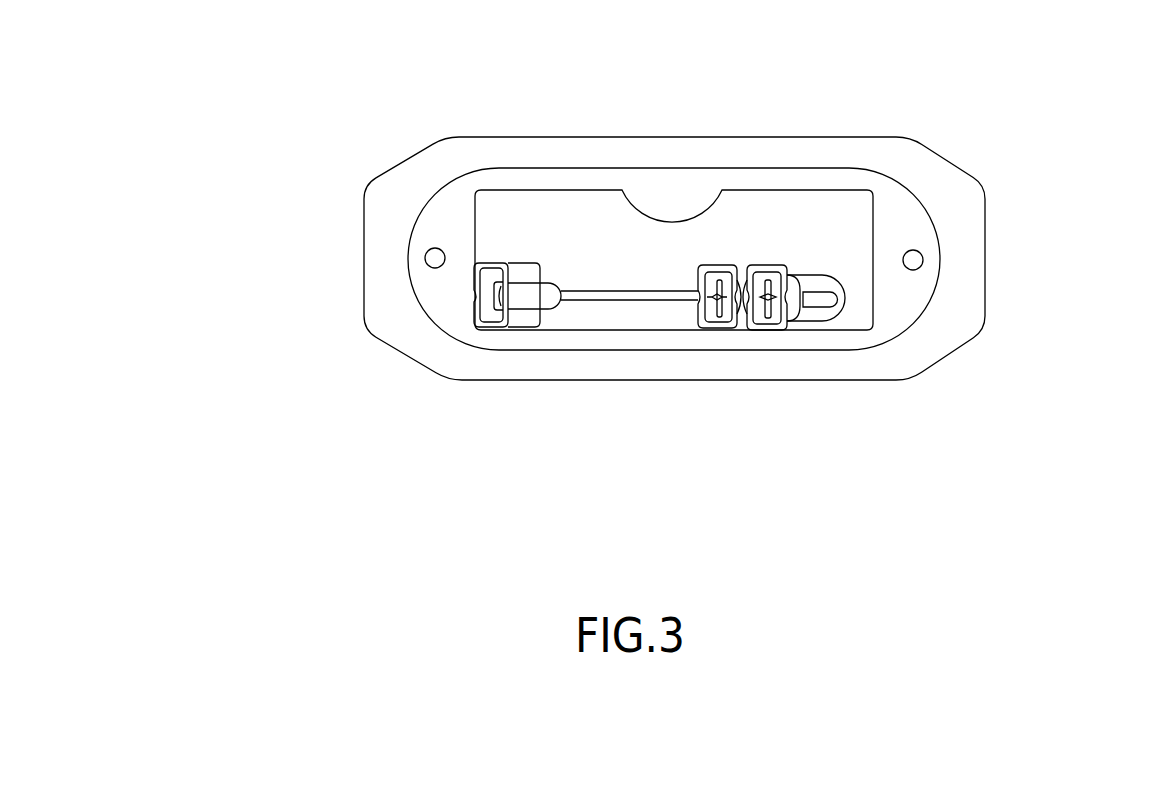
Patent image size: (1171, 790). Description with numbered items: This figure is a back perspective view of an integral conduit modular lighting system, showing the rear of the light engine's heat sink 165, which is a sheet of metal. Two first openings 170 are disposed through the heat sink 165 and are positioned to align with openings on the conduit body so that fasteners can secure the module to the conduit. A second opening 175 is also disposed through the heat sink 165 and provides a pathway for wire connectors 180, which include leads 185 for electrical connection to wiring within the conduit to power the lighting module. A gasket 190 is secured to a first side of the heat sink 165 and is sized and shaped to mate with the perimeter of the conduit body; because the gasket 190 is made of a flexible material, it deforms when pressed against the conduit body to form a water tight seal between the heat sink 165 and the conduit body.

The heat sink 165 is at (872, 152).
The gasket 190 is at (673, 180).
The first openings 170 is at (425, 257).
The wire connectors 180 is at (630, 298).
The leads 185 is at (521, 317).
The second opening 175 is at (840, 315).